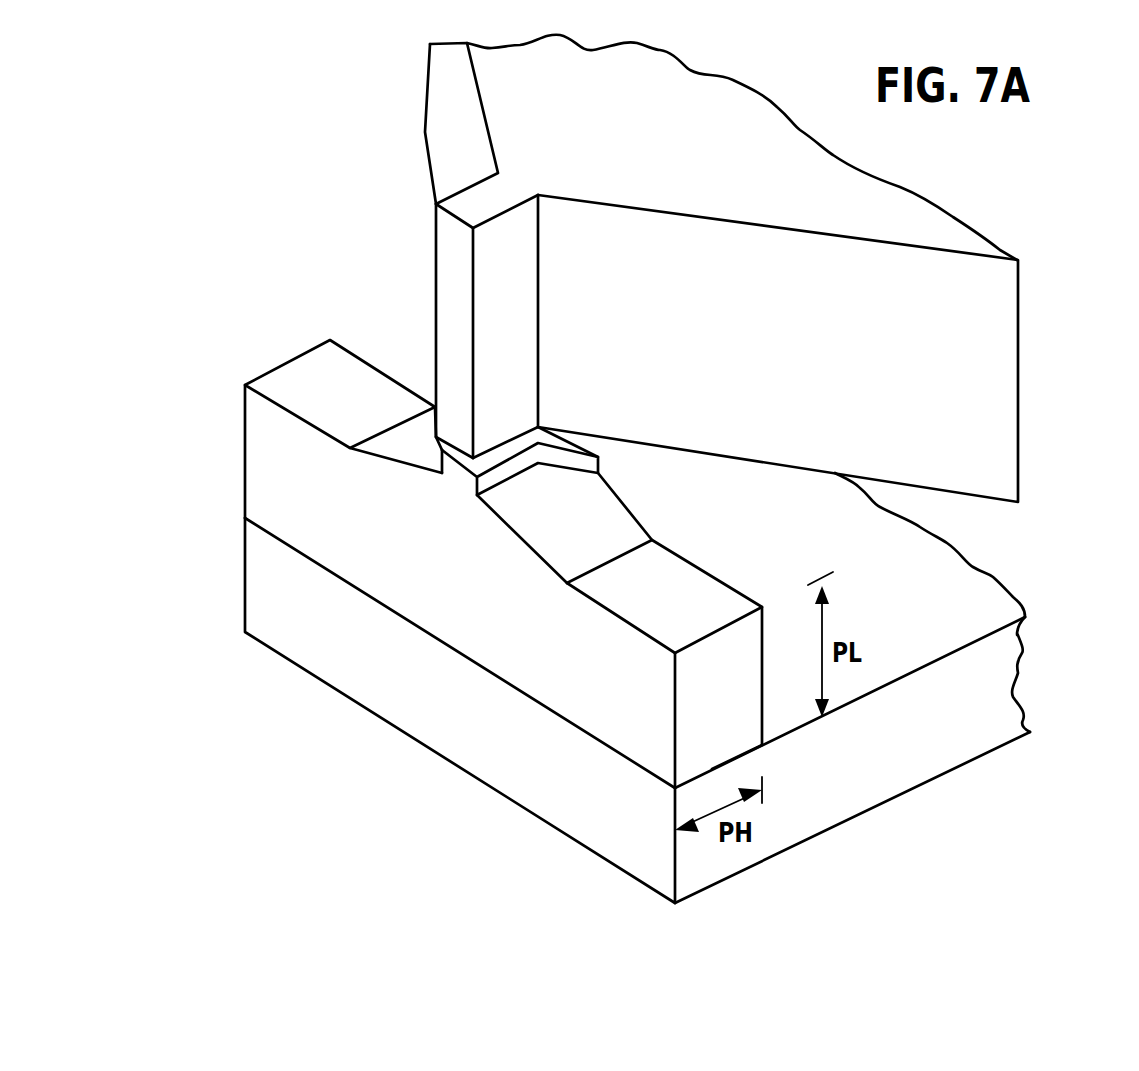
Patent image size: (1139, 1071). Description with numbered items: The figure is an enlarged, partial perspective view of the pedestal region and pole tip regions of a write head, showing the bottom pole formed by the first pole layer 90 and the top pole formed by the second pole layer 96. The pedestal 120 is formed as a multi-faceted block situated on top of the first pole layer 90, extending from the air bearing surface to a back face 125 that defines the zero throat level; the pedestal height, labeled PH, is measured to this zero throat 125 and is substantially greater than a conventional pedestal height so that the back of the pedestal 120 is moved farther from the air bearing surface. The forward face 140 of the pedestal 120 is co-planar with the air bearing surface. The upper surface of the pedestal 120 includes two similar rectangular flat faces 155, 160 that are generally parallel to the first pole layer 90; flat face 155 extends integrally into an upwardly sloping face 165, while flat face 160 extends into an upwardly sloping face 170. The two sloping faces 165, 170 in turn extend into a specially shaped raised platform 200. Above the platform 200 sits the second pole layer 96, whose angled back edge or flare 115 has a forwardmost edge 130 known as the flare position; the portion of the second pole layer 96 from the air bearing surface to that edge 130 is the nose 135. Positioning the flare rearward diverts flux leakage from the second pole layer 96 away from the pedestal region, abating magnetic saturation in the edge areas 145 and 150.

The second pole layer 96 is at (655, 268).
The nose 135 is at (458, 260).
The flare 115 is at (745, 348).
The forwardmost edge 130 is at (556, 291).
The raised platform 200 is at (618, 470).
The pedestal 120 is at (262, 434).
The flat face 155 is at (357, 403).
The sloping face 165 is at (435, 453).
The edge area 145 is at (320, 451).
The forward face 140 is at (438, 552).
The edge area 150 is at (522, 539).
The sloping face 170 is at (597, 543).
The flat face 160 is at (677, 613).
The first pole layer 90 is at (637, 688).
The back face 125 is at (781, 719).